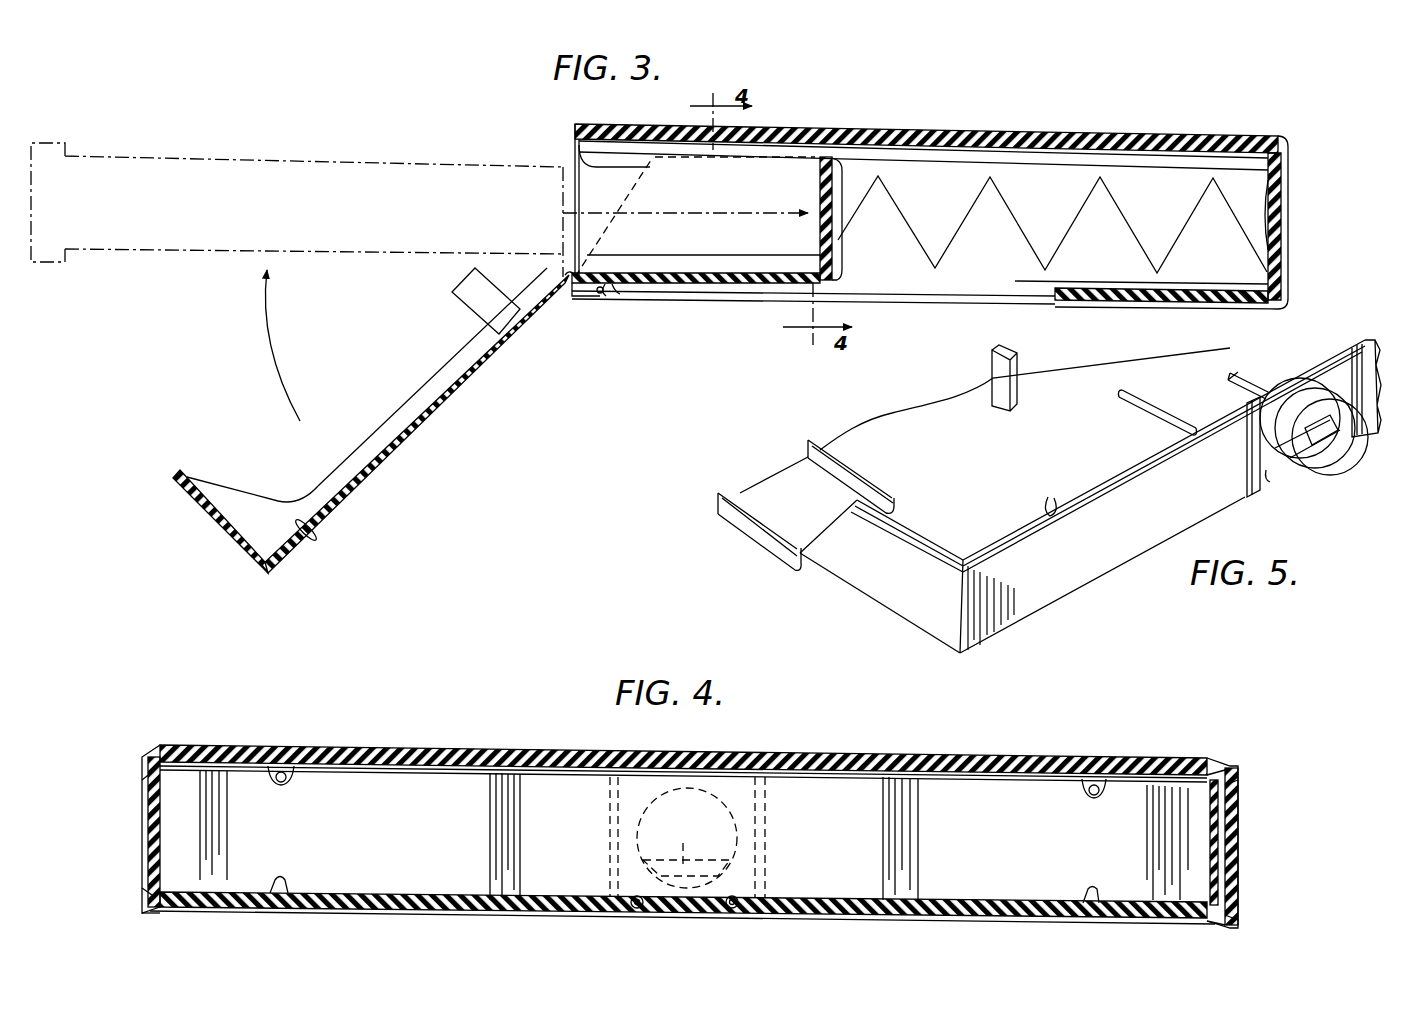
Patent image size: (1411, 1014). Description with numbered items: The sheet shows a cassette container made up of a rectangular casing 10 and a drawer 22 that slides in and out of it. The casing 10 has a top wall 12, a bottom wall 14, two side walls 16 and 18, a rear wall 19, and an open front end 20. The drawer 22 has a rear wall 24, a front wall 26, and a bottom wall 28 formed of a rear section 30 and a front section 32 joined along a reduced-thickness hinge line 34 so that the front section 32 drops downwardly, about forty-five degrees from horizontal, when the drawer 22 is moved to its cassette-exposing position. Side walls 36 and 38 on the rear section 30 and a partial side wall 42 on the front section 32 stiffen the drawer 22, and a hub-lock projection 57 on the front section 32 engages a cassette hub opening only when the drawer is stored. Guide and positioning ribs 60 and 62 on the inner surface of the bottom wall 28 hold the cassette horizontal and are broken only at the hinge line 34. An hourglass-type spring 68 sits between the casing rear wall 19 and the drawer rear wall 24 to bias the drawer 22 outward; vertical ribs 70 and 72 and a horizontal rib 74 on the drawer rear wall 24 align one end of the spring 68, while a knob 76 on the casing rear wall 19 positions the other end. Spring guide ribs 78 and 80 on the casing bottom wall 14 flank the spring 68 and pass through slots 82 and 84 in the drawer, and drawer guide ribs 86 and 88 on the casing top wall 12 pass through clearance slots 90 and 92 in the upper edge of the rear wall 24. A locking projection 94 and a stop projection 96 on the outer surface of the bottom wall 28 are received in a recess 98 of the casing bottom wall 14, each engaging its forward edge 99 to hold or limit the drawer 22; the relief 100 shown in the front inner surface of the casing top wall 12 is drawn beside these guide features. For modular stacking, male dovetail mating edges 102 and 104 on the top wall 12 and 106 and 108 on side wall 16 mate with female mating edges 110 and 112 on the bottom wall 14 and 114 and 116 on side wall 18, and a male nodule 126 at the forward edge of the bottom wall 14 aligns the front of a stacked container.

In FIG. 3, the casing 10 is at (927, 210).
In FIG. 4, the casing 10 is at (686, 825).
In FIG. 3, the top wall 12 is at (1088, 137).
In FIG. 4, the top wall 12 is at (683, 739).
In FIG. 3, the bottom wall 14 is at (1086, 302).
In FIG. 4, the bottom wall 14 is at (873, 912).
In FIG. 4, the side wall 16 is at (1248, 823).
In FIG. 4, the side wall 18 is at (117, 829).
In FIG. 3, the rear wall 19 is at (1283, 185).
In FIG. 3, the open front end 20 is at (588, 172).
In FIG. 3, the drawer 22 is at (430, 400).
In FIG. 5, the drawer 22 is at (1052, 486).
In FIG. 4, the drawer 22 is at (709, 826).
In FIG. 3, the rear wall 24 is at (822, 247).
In FIG. 5, the rear wall 24 is at (1076, 578).
In FIG. 4, the rear wall 24 is at (398, 780).
In FIG. 3, the front wall 26 is at (222, 540).
In FIG. 5, the bottom wall 28 is at (891, 435).
In FIG. 4, the bottom wall 28 is at (462, 905).
In FIG. 3, the rear section 30 is at (708, 284).
In FIG. 5, the rear section 30 is at (1182, 392).
In FIG. 4, the rear section 30 is at (556, 906).
In FIG. 3, the front section 32 is at (402, 428).
In FIG. 5, the front section 32 is at (926, 428).
In FIG. 3, the hinge line 34 is at (572, 278).
In FIG. 5, the hinge line 34 is at (1065, 420).
In FIG. 5, the side wall 36 is at (903, 598).
In FIG. 3, the side wall 38 is at (606, 292).
In FIG. 3, the partial side wall 42 is at (243, 502).
In FIG. 3, the hub-lock projection 57 is at (486, 301).
In FIG. 5, the hub-lock projection 57 is at (992, 380).
In FIG. 5, the guide and positioning rib 60 is at (857, 478).
In FIG. 4, the guide and positioning rib 60 is at (1089, 889).
In FIG. 3, the guide and positioning rib 62 is at (447, 372).
In FIG. 4, the guide and positioning rib 62 is at (284, 886).
In FIG. 3, the spring 68 is at (1196, 212).
In FIG. 5, the spring 68 is at (1337, 490).
In FIG. 4, the spring 68 is at (695, 782).
In FIG. 5, the vertical rib 70 is at (1245, 455).
In FIG. 4, the vertical rib 70 is at (768, 848).
In FIG. 5, the vertical rib 72 is at (1364, 343).
In FIG. 4, the vertical rib 72 is at (612, 826).
In FIG. 5, the horizontal rib 74 is at (1340, 447).
In FIG. 4, the horizontal rib 74 is at (686, 851).
In FIG. 3, the knob 76 is at (1284, 233).
In FIG. 4, the guide rib 78 is at (735, 912).
In FIG. 3, the guide rib 80 is at (1238, 300).
In FIG. 4, the guide rib 80 is at (640, 910).
In FIG. 5, the slot 82 is at (1148, 418).
In FIG. 4, the slot 82 is at (740, 898).
In FIG. 5, the slot 84 is at (1248, 374).
In FIG. 4, the slot 84 is at (633, 898).
In FIG. 4, the drawer guide rib 86 is at (1092, 778).
In FIG. 4, the drawer guide rib 88 is at (283, 762).
In FIG. 5, the clearance slot 90 is at (1049, 498).
In FIG. 4, the clearance slot 90 is at (1093, 800).
In FIG. 4, the clearance slot 92 is at (285, 789).
In FIG. 3, the locking projection 94 is at (311, 540).
In FIG. 3, the stop projection 96 is at (620, 292).
In FIG. 3, the recess 98 is at (908, 299).
In FIG. 4, the recess 98 is at (684, 912).
In FIG. 3, the forward edge 99 is at (596, 297).
In FIG. 3, the top plate 100 is at (663, 141).
In FIG. 4, the top plate 100 is at (541, 768).
In FIG. 4, the mating edge 102 is at (172, 745).
In FIG. 4, the mating edge 104 is at (1198, 758).
In FIG. 4, the mating edge 106 is at (1240, 804).
In FIG. 4, the mating edge 108 is at (1240, 900).
In FIG. 4, the mating edge 110 is at (165, 913).
In FIG. 4, the mating edge 112 is at (1218, 922).
In FIG. 4, the mating edge 114 is at (145, 770).
In FIG. 4, the mating edge 116 is at (113, 879).
In FIG. 3, the male nodule 126 is at (571, 298).